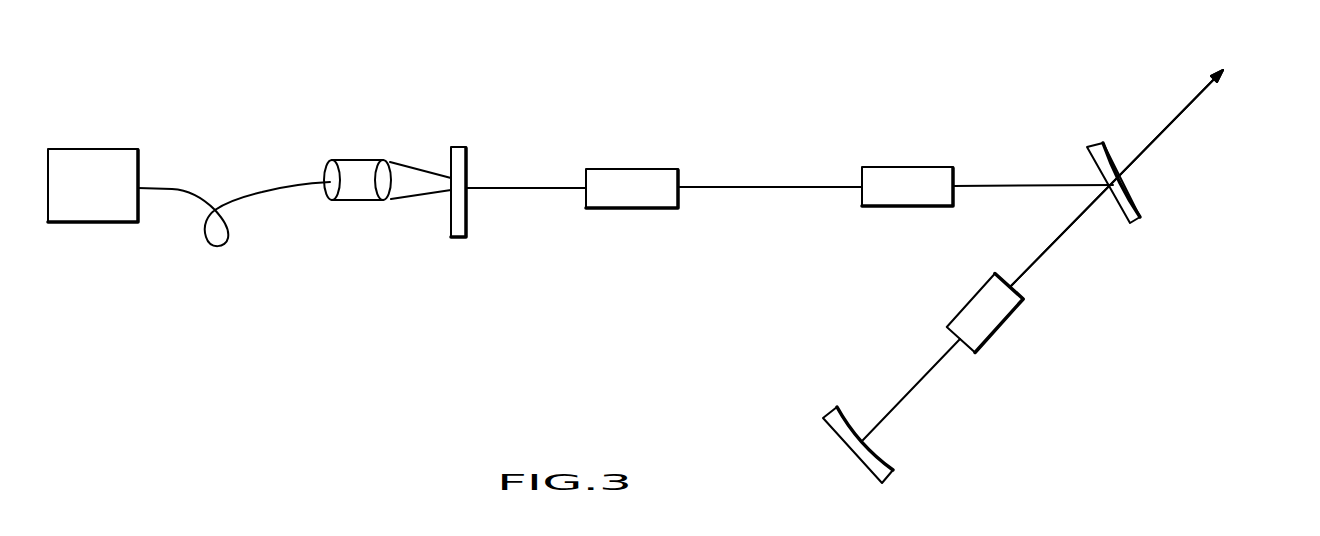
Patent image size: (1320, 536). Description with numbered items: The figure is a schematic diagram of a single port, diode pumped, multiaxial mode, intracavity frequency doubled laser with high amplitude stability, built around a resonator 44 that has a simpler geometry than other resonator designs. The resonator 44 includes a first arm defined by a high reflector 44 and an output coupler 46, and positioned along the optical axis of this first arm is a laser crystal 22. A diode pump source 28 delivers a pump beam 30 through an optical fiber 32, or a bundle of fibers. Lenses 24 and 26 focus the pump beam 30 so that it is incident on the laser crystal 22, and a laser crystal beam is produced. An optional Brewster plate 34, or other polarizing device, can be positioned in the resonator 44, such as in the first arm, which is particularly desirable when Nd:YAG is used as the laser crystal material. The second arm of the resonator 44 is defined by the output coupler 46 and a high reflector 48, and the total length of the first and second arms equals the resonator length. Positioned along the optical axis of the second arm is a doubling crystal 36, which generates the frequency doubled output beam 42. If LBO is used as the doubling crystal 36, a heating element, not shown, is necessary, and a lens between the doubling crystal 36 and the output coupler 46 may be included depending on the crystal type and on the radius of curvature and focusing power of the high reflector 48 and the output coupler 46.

The laser crystal 22 is at (627, 177).
The lens 24 is at (331, 199).
The lens 26 is at (385, 200).
The diode pump source 28 is at (95, 151).
The pump beam 30 is at (411, 176).
The optical fiber 32 is at (172, 188).
The Brewster plate 34 is at (885, 177).
The doubling crystal 36 is at (997, 310).
The frequency doubled output beam 42 is at (1192, 107).
The resonator 44 is at (460, 160).
The output coupler 46 is at (1143, 214).
The high reflector 48 is at (882, 458).